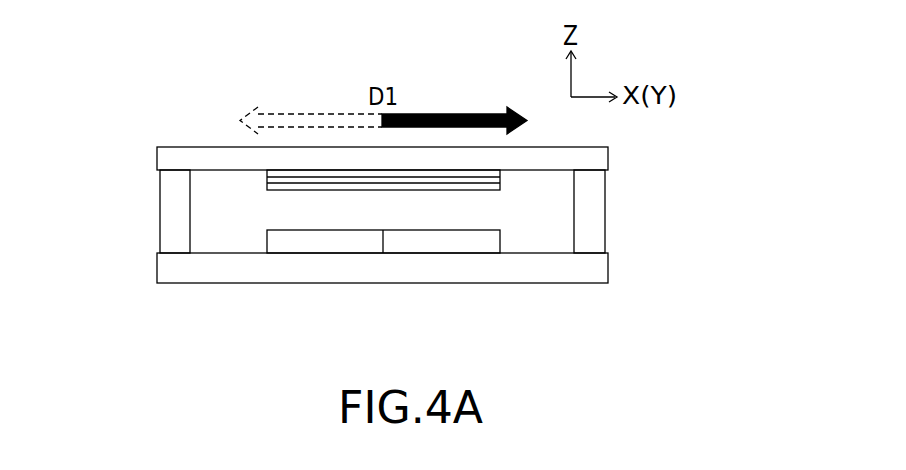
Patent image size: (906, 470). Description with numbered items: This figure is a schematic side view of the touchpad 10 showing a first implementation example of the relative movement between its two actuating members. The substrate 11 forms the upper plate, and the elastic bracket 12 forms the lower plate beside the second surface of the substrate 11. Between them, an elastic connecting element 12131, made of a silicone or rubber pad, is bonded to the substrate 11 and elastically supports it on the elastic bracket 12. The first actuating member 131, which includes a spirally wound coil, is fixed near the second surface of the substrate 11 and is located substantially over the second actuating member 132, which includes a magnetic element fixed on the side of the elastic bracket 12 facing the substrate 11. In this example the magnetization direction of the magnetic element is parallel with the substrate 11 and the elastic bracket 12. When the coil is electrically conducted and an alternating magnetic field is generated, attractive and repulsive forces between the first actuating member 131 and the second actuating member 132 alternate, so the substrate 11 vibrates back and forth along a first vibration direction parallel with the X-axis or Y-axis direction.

The touchpad 10 is at (221, 67).
The substrate 11 is at (203, 157).
The elastic bracket 12 is at (230, 270).
The elastic connecting element 12131 is at (173, 217).
The first actuating member 131 is at (500, 178).
The second actuating member 132 is at (500, 240).